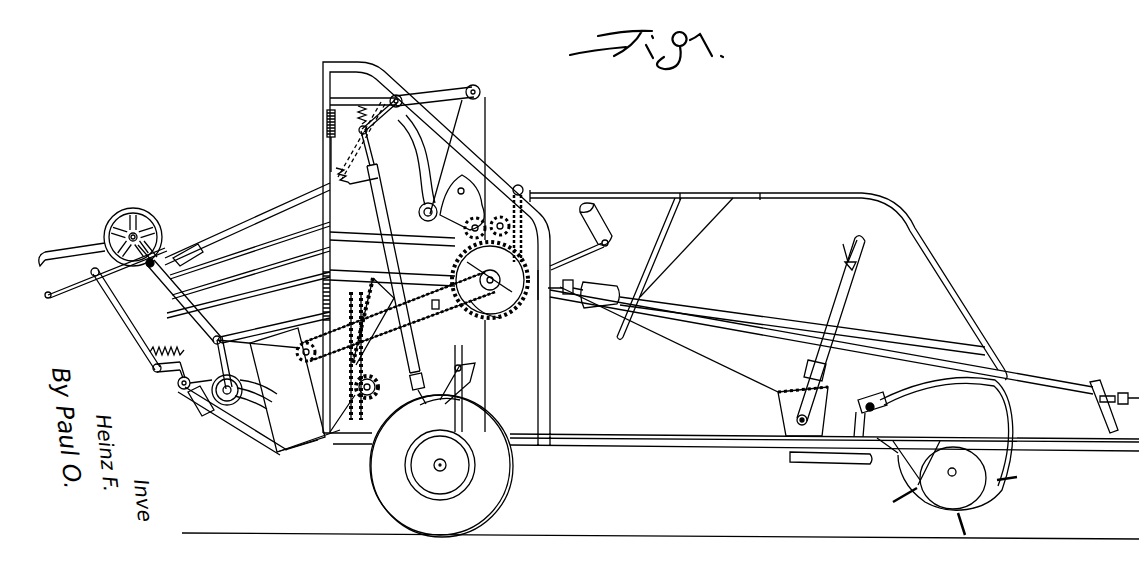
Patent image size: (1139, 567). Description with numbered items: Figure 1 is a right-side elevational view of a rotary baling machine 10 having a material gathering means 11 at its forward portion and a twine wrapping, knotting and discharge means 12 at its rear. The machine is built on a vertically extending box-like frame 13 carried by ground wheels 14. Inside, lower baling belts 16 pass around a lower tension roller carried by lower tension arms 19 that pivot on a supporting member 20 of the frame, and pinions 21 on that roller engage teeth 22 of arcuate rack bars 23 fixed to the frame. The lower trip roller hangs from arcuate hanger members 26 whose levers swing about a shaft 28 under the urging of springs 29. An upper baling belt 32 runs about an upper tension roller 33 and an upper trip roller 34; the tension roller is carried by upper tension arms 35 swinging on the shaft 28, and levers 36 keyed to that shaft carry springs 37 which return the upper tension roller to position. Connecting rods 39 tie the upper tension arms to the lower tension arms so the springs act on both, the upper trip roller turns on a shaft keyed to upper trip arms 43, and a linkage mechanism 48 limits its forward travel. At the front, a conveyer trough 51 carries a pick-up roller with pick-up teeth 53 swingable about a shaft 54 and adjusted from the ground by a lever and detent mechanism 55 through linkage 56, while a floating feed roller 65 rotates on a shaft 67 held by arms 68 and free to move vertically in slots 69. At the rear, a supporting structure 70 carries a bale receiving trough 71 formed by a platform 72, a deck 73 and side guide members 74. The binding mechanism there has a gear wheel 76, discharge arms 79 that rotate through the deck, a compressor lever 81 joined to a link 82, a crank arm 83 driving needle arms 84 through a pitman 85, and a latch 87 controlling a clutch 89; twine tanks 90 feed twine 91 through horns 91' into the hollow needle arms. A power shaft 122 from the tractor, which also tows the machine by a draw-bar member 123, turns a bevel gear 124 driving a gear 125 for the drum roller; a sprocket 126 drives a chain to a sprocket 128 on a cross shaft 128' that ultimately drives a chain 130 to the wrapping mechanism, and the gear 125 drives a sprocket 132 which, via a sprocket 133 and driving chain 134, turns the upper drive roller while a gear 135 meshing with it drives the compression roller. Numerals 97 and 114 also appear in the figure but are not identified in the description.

The rotary baling mechanism 10 is at (371, 61).
The material gathering means 11 is at (813, 191).
The twine wrapping, knotting and discharge means 12 is at (151, 207).
The box-like frame 13 is at (545, 440).
The ground wheels 14 is at (482, 502).
The lower baling belts 16 is at (340, 262).
The lower tension arms 19 is at (440, 392).
The supporting member 20 is at (466, 394).
The pinions 21 is at (370, 376).
The teeth 22 is at (364, 352).
The rack bars 23 is at (360, 292).
The hanger members 26 is at (426, 132).
The shaft 28 is at (400, 98).
The springs 29 is at (352, 146).
The upper baling belt 32 is at (490, 108).
The upper tension roller 33 is at (481, 90).
The upper trip roller 34 is at (424, 204).
The upper tension arms 35 is at (445, 93).
The levers 36 is at (345, 98).
The springs 37 is at (328, 125).
The connecting rods 39 is at (330, 236).
The upper trip arms 43 is at (490, 280).
The linkage mechanism 48 is at (380, 212).
The conveyer trough 51 is at (925, 246).
The pick-up teeth 53 is at (1005, 480).
The shaft 54 is at (875, 400).
The lever and detent mechanism 55 is at (845, 318).
The linkage 56 is at (838, 462).
The feed roller 65 is at (606, 230).
The shaft 67 is at (608, 246).
The arms 68 is at (584, 263).
The slots 69 is at (600, 213).
The supporting structure 70 is at (264, 430).
The bale receiving trough 71 is at (233, 257).
The platform 72 is at (266, 322).
The deck 73 is at (272, 226).
The side guide members 74 is at (264, 284).
The gear wheel 76 is at (107, 222).
The discharge arms 79 is at (50, 258).
The compressor lever 81 is at (112, 268).
The link 82 is at (124, 318).
The crank arm 83 is at (180, 390).
The needle arms 84 is at (262, 400).
The pitman 85 is at (176, 296).
The latch 87 is at (170, 377).
The clutch 89 is at (258, 385).
The twine tanks 90 is at (300, 440).
The twine 91 is at (232, 425).
The horns 91' is at (191, 414).
The spring 97 is at (345, 173).
The sprocket 114 is at (486, 185).
The power shaft 122 is at (440, 316).
The draw-bar member 123 is at (1088, 445).
The bevel gear 124 is at (555, 320).
The gear 125 is at (560, 335).
The sprocket 126 is at (488, 322).
The sprocket 128 is at (258, 361).
The cross shaft 128' is at (288, 353).
The chain 130 is at (246, 340).
The sprocket 132 is at (540, 232).
The sprocket 133 is at (503, 185).
The driving chain 134 is at (525, 186).
The gear 135 is at (530, 197).